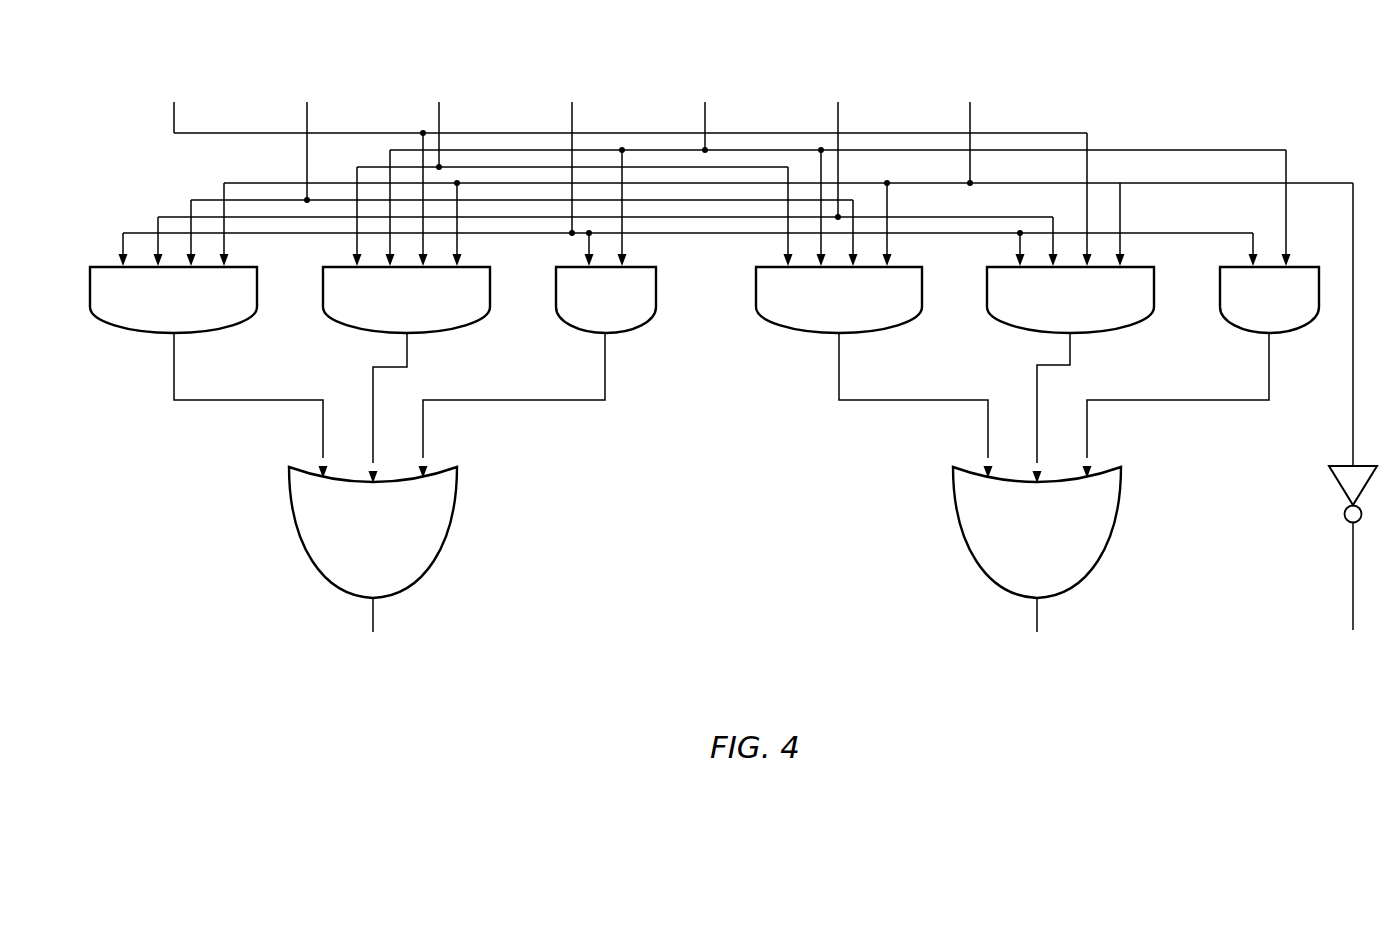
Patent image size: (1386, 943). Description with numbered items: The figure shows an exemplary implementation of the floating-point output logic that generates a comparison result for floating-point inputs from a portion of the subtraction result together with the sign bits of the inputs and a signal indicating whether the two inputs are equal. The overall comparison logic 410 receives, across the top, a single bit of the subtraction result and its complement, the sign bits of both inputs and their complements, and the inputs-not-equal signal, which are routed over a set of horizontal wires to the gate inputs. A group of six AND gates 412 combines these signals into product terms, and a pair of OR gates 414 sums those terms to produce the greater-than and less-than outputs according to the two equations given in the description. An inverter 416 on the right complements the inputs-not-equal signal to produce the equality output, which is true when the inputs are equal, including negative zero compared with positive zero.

The comparison result logic circuit 410 is at (1292, 94).
The AND gates 412 is at (704, 300).
The OR gates 414 is at (705, 532).
The inverter 416 is at (1353, 494).